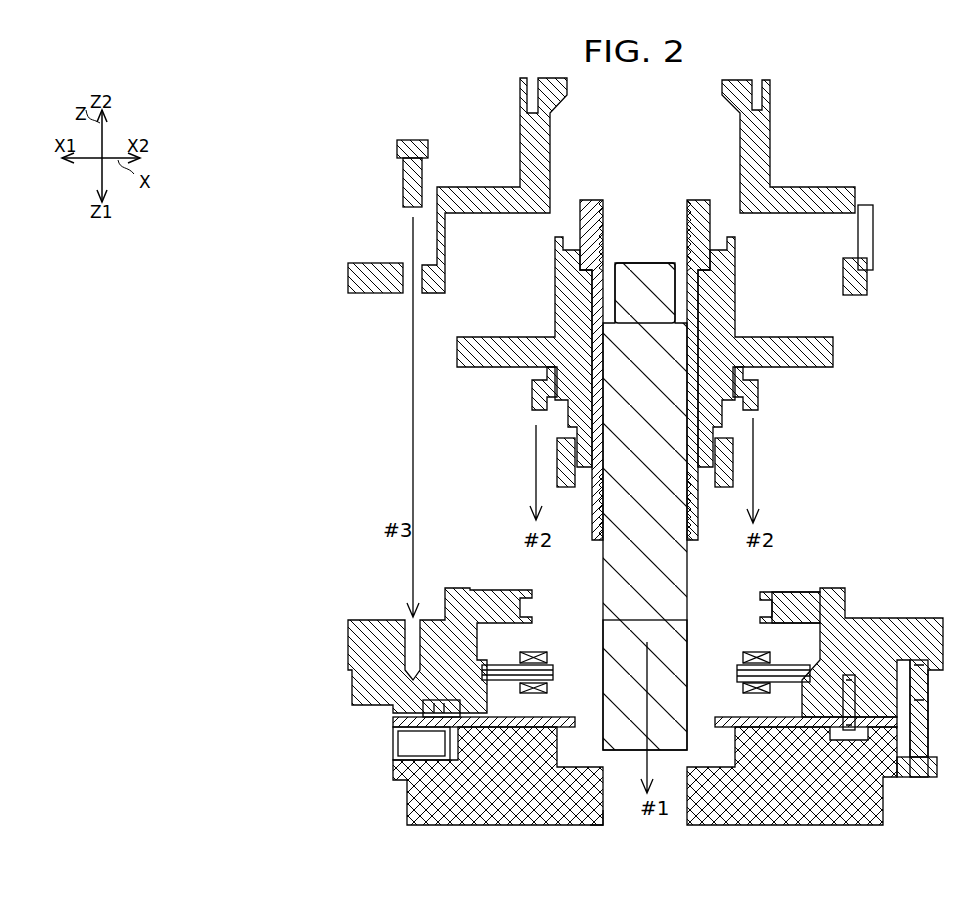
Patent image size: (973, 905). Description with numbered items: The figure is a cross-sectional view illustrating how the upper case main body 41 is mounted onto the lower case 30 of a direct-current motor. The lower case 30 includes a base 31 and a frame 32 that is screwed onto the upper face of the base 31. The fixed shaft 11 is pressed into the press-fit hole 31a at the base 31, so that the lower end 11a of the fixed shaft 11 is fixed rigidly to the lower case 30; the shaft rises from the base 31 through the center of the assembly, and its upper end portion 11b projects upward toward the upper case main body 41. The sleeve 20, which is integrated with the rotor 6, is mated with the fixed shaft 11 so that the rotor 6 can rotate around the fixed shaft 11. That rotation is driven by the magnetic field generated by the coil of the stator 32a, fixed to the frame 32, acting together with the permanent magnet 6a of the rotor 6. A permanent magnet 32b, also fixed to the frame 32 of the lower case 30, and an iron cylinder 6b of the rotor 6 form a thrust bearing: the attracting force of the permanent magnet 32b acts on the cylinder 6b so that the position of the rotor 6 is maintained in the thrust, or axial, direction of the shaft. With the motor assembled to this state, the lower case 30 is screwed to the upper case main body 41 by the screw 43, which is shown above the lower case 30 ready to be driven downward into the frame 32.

The upper case main body 41 is at (350, 213).
The screw 43 is at (412, 140).
The sleeve 20 is at (697, 300).
The rotor 6 is at (833, 347).
The permanent magnet 6a is at (733, 463).
The iron cylinder 6b is at (757, 390).
The fixed shaft 11 is at (686, 445).
The lower end 11a is at (677, 730).
The shaft upper end portion 11b is at (645, 267).
The lower case 30 is at (490, 688).
The base 31 is at (581, 791).
The press-fit hole 31a is at (616, 806).
The frame 32 is at (563, 688).
The stator 32a is at (757, 687).
The permanent magnet 32b is at (790, 610).